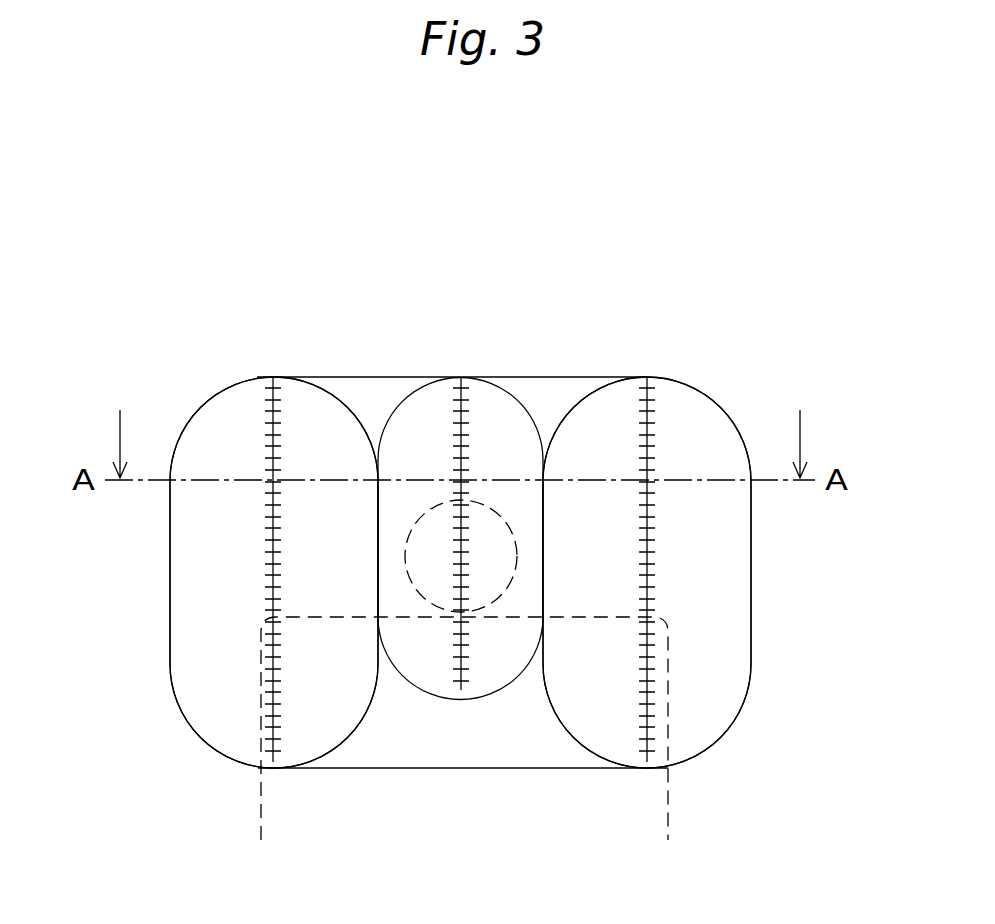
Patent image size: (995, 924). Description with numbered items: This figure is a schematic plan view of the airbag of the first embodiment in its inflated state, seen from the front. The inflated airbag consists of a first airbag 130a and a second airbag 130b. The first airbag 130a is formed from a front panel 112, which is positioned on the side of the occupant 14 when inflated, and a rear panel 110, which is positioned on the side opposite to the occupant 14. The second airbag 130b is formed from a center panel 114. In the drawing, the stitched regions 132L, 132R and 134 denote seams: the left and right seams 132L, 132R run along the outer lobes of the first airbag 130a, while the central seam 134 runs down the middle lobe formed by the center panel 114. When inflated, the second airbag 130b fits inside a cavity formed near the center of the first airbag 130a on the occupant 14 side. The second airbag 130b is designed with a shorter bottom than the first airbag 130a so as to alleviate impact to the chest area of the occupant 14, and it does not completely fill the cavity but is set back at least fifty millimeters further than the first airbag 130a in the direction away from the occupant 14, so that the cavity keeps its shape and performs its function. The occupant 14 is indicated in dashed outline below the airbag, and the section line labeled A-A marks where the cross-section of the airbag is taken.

The occupant 14 is at (262, 812).
The rear panel 110 is at (214, 412).
The front panel 112 is at (563, 725).
The center panel 114 is at (448, 377).
The first airbag 130a is at (678, 417).
The second airbag 130b is at (425, 425).
The stitched region 132L is at (273, 578).
The stitched region 132R is at (652, 575).
The stitched region 134 is at (463, 403).